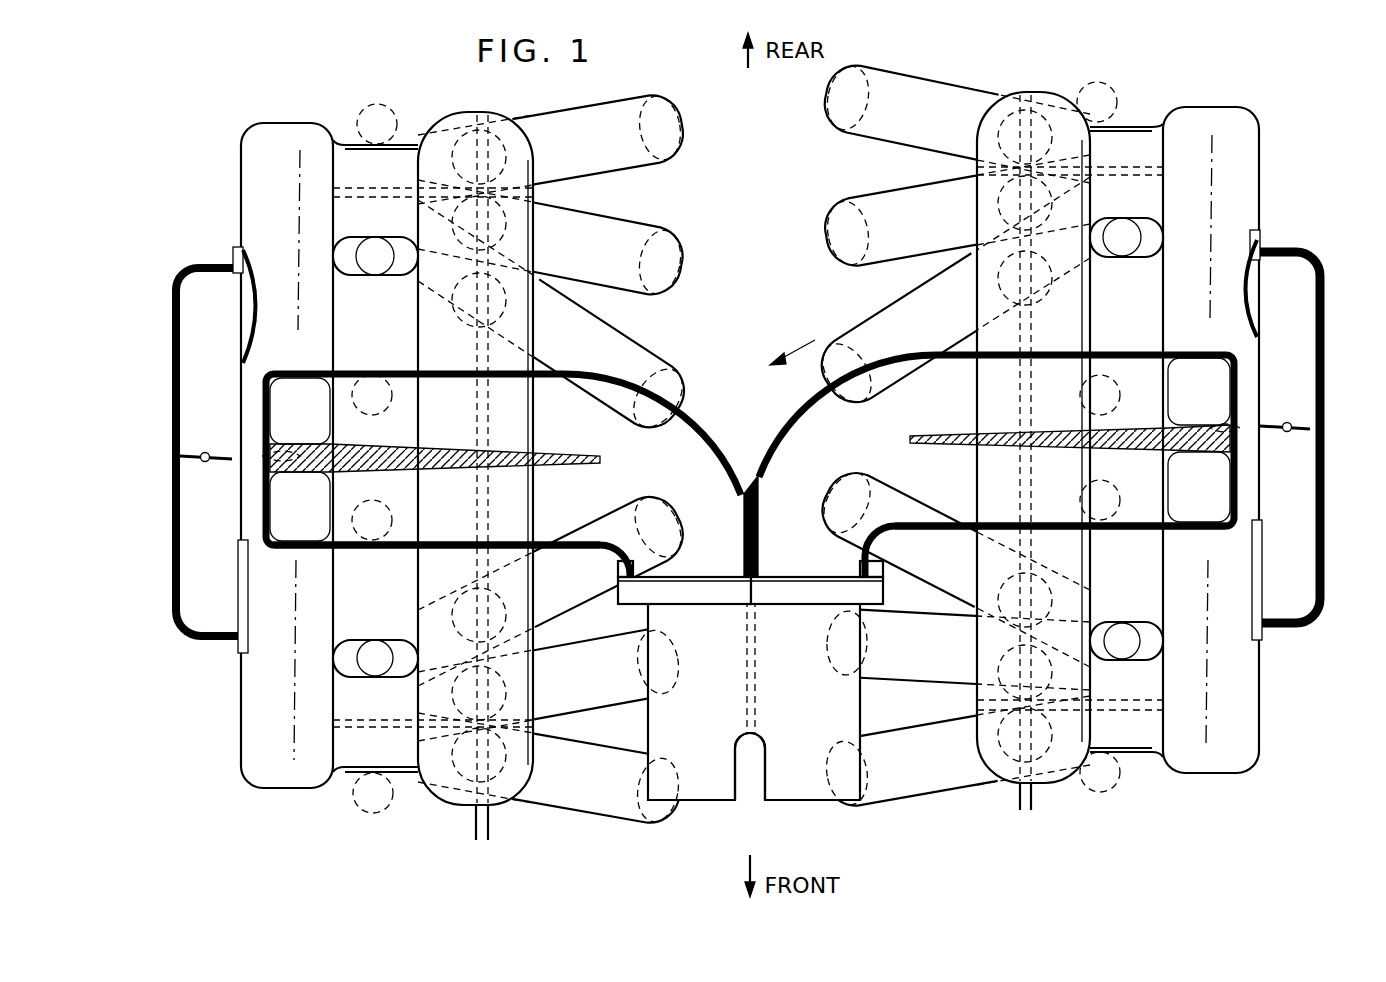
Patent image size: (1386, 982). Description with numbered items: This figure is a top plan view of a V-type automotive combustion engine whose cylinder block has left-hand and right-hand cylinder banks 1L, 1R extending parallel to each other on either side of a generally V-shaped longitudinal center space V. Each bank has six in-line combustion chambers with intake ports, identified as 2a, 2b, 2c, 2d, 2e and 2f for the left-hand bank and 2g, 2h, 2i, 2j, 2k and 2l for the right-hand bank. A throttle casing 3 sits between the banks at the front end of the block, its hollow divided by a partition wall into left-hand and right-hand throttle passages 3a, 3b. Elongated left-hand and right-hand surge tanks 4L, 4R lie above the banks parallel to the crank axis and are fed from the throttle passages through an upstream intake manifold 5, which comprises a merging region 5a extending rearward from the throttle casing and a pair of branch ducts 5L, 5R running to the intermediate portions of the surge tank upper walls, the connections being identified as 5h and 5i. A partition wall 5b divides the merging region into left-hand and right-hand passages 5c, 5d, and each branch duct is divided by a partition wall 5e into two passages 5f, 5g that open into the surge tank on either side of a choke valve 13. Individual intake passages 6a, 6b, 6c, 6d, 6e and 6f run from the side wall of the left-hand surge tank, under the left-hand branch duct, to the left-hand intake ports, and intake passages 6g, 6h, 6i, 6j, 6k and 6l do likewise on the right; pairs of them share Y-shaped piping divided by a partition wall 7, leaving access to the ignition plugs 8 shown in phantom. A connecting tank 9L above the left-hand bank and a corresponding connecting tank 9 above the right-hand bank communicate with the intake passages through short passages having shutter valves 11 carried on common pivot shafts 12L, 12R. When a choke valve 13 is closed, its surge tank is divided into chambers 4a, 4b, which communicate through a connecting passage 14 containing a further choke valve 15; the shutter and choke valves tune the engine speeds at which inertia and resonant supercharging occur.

The left-hand cylinder bank 1L is at (398, 850).
The right-hand cylinder bank 1R is at (1185, 848).
The intake port 2a is at (656, 828).
The intake port 2b is at (665, 700).
The intake port 2c is at (688, 538).
The intake port 2d is at (692, 390).
The intake port 2e is at (695, 286).
The intake port 2f is at (688, 145).
The intake port 2g is at (866, 800).
The intake port 2h is at (830, 680).
The intake port 2i is at (836, 540).
The intake port 2j is at (816, 375).
The intake port 2k is at (824, 262).
The intake port 2l is at (826, 130).
The throttle casing 3 is at (754, 736).
The left-hand throttle passage 3a is at (702, 805).
The right-hand throttle passage 3b is at (826, 804).
The chamber 4a is at (272, 738).
The chamber 4b is at (285, 170).
The left-hand surge tank 4L is at (282, 790).
The right-hand surge tank 4R is at (1232, 776).
The upstream intake manifold 5 is at (744, 482).
The merging region 5a is at (779, 528).
The partition wall 5b is at (758, 522).
The left-hand passage 5c is at (708, 606).
The right-hand passage 5d is at (784, 606).
The partition wall 5e is at (560, 454).
The passage 5f is at (420, 548).
The passage 5g is at (440, 396).
The connection 5h is at (290, 542).
The connection 5i is at (294, 396).
The left-hand branch duct 5L is at (576, 372).
The right-hand branch duct 5R is at (952, 352).
The intake passage 6a is at (590, 830).
The intake passage 6b is at (586, 712).
The intake passage 6c is at (588, 603).
The intake passage 6d is at (650, 345).
The intake passage 6e is at (630, 215).
The intake passage 6f is at (625, 100).
The intake passage 6g is at (940, 794).
The intake passage 6h is at (882, 684).
The intake passage 6i is at (878, 585).
The intake passage 6j is at (888, 322).
The intake passage 6k is at (886, 200).
The intake passage 6l is at (908, 92).
The partition wall 7 is at (362, 192).
The ignition plug 8 is at (378, 104).
The connecting tank 9 is at (1068, 786).
The connecting tank 9L is at (508, 802).
The shutter valve 11 is at (548, 190).
The common pivot shaft 12L is at (476, 832).
The common pivot shaft 12R is at (1020, 806).
The choke valve 13 is at (288, 458).
The connecting passage 14 is at (174, 534).
The choke valve 15 is at (202, 460).
The longitudinal center space V is at (800, 338).